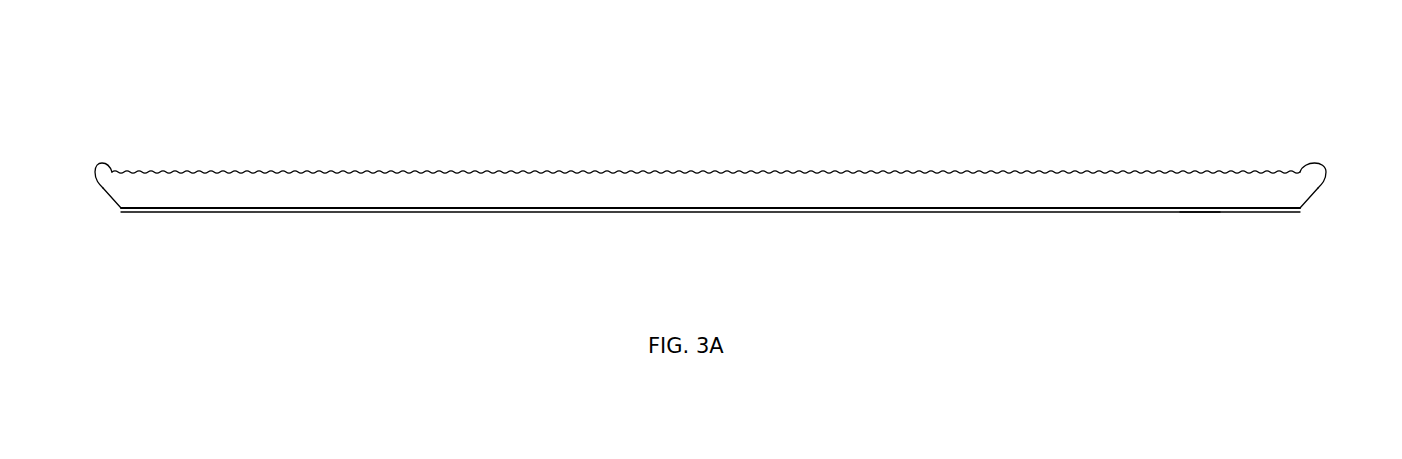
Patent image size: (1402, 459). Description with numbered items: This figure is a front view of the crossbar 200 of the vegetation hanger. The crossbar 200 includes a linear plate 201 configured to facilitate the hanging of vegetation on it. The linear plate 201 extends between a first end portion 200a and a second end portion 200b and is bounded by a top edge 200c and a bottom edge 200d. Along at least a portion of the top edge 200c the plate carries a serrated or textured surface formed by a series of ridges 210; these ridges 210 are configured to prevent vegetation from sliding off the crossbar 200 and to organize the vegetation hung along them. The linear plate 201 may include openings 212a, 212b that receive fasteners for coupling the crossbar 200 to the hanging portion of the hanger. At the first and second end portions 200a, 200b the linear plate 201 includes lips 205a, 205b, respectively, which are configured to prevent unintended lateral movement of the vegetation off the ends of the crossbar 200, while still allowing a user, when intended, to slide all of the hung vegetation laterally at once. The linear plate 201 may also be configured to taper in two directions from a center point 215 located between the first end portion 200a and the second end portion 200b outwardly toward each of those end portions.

The crossbar 200 is at (734, 217).
The first end portion 200a is at (1352, 140).
The second end portion 200b is at (131, 133).
The top edge 200c is at (514, 84).
The bottom edge 200d is at (516, 245).
The linear plate 201 is at (862, 184).
The lip 205a is at (1315, 177).
The lip 205b is at (105, 186).
The ridges 210 is at (1029, 172).
The opening 212a is at (672, 192).
The opening 212b is at (748, 192).
The center point 215 is at (1198, 210).